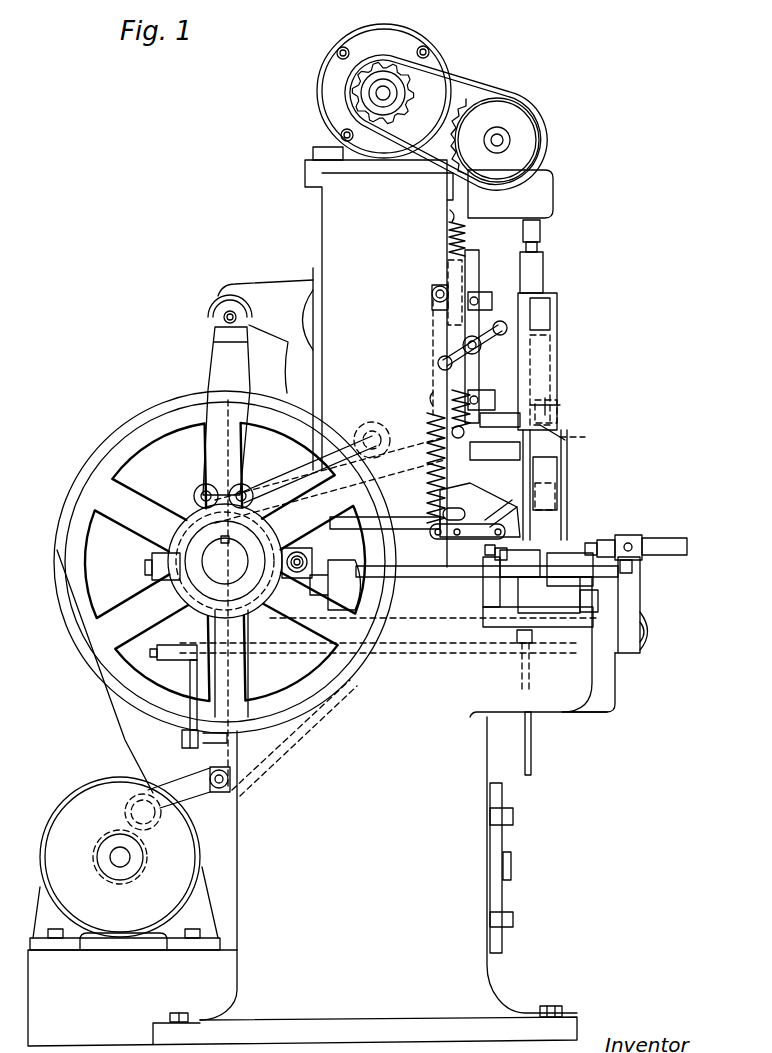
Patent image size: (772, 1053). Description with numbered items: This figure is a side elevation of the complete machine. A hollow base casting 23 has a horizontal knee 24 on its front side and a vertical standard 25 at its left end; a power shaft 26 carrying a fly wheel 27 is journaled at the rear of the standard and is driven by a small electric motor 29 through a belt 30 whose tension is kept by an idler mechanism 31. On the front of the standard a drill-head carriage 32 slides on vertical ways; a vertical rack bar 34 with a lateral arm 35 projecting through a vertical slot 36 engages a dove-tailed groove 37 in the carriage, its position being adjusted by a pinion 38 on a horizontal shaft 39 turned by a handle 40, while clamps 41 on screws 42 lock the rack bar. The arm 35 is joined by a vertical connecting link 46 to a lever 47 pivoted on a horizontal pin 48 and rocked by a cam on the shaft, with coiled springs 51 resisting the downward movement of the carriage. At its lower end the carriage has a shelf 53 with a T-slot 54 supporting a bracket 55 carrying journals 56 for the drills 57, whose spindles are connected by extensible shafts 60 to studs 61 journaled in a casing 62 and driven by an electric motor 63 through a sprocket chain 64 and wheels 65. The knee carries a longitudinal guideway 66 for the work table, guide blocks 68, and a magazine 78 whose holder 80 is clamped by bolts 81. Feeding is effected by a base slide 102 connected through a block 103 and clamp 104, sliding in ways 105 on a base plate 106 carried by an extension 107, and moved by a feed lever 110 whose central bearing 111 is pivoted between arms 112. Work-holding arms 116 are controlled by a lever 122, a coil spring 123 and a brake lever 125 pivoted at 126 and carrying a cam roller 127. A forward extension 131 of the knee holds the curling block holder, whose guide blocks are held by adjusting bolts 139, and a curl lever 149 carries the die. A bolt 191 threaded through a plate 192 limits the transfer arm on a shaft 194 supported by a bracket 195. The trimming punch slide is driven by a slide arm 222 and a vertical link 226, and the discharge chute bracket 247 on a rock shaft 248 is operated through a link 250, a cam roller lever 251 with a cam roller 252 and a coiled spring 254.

The electric motor 63 is at (400, 46).
The wheels 65 is at (410, 95).
The sprocket chain 64 is at (470, 83).
The casing 62 is at (557, 192).
The vertical standard 25 is at (330, 204).
The coiled springs 51 is at (468, 243).
The studs 61 is at (540, 233).
The vertical slot 36 is at (450, 268).
The extensible shafts 60 is at (540, 268).
The lateral arm 35 is at (430, 290).
The carriage 32 is at (479, 277).
The screws 42 is at (478, 293).
The clamps 41 is at (480, 301).
The pinion 38 is at (499, 321).
The slide arm 222 is at (262, 292).
The vertical rack bar 34 is at (462, 341).
The horizontal shaft 39 is at (482, 346).
The dove-tailed groove 37 is at (485, 356).
The handle 40 is at (438, 364).
The magazine 78 is at (563, 356).
The vertical link 226 is at (210, 346).
The vertical connecting link 46 is at (430, 397).
The coil spring 123 is at (427, 431).
The shelf 53 is at (531, 416).
The T-slot 54 is at (553, 433).
The journals 56 is at (583, 437).
The fly wheel 27 is at (148, 419).
The horizontal pin 48 is at (372, 440).
The lever 47 is at (281, 470).
The bracket 55 is at (512, 461).
The power shaft 26 is at (183, 520).
The cam roller 127 is at (254, 495).
The pivot 126 is at (385, 499).
The curl lever 149 is at (484, 488).
The arms 116 is at (506, 520).
The drills 57 is at (558, 521).
The plate 192 is at (608, 540).
The bolt 191 is at (637, 536).
The shaft 194 is at (688, 548).
The cam roller 252 is at (157, 552).
The arms 112 is at (340, 562).
The brake lever 125 is at (405, 522).
The lever 122 is at (480, 540).
The bolts 81 is at (487, 553).
The adjusting bolts 139 is at (633, 568).
The guide blocks 68 is at (600, 575).
The base slide 102 is at (582, 584).
The feed lever 110 is at (408, 578).
The holder 80 is at (507, 556).
The clamp 104 is at (510, 578).
The base plate 106 is at (581, 607).
The bracket 195 is at (641, 604).
The central bearing 111 is at (320, 588).
The ways 105 is at (507, 594).
The block 103 is at (515, 590).
The longitudinal guideway 66 is at (586, 618).
The cam roller lever 251 is at (192, 665).
The rock shaft 248 is at (432, 652).
The extension 107 is at (546, 642).
The forward extension 131 is at (616, 676).
The coiled spring 254 is at (230, 748).
The belt 30 is at (118, 742).
The idler mechanism 31 is at (188, 787).
The link 250 is at (188, 750).
The horizontal knee 24 is at (560, 701).
The electric motor 29 is at (80, 813).
The bracket 247 is at (532, 742).
The hollow base casting 23 is at (475, 758).